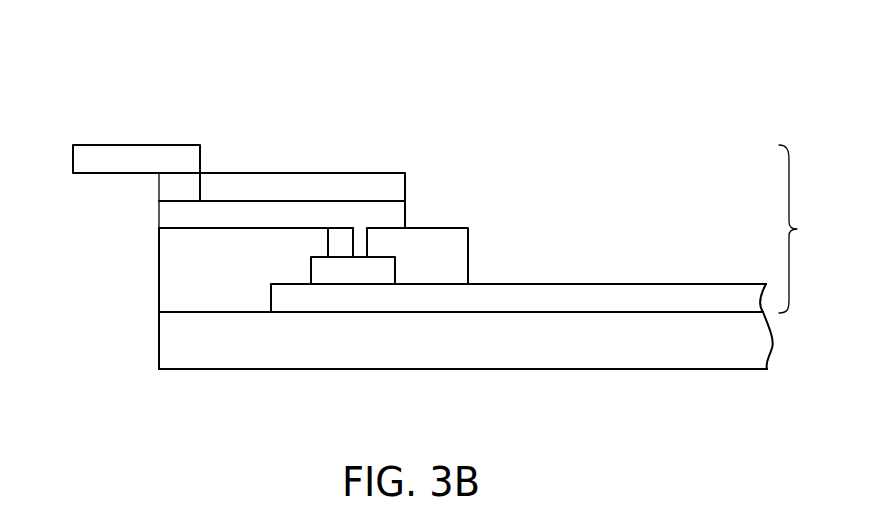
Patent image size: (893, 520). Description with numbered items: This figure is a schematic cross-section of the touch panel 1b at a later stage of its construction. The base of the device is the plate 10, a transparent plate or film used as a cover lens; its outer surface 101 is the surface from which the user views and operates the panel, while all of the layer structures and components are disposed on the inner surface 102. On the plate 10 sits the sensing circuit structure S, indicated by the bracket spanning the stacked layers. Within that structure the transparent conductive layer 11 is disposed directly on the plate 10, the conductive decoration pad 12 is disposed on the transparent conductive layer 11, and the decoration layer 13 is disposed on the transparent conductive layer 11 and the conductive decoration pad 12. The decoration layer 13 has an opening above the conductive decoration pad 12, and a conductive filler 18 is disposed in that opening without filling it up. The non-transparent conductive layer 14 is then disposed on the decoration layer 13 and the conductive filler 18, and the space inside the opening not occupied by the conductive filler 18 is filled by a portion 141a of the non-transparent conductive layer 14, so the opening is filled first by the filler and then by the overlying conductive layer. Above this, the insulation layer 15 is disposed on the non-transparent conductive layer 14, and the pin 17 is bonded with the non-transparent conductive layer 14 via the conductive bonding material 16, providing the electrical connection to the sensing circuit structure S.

The touch panel 1b is at (133, 87).
The pin 17 is at (123, 158).
The conductive bonding material 16 is at (185, 185).
The insulation layer 15 is at (393, 187).
The non-transparent conductive layer 14 is at (177, 217).
The decoration layer 13 is at (443, 240).
The conductive filler 18 is at (340, 237).
The portion of the non-transparent conductive layer 141a is at (360, 244).
The conductive decoration pad 12 is at (351, 272).
The transparent conductive layer 11 is at (670, 295).
The inner surface 102 is at (176, 311).
The plate 10 is at (176, 348).
The outer surface 101 is at (176, 369).
The sensing circuit structure S is at (798, 229).